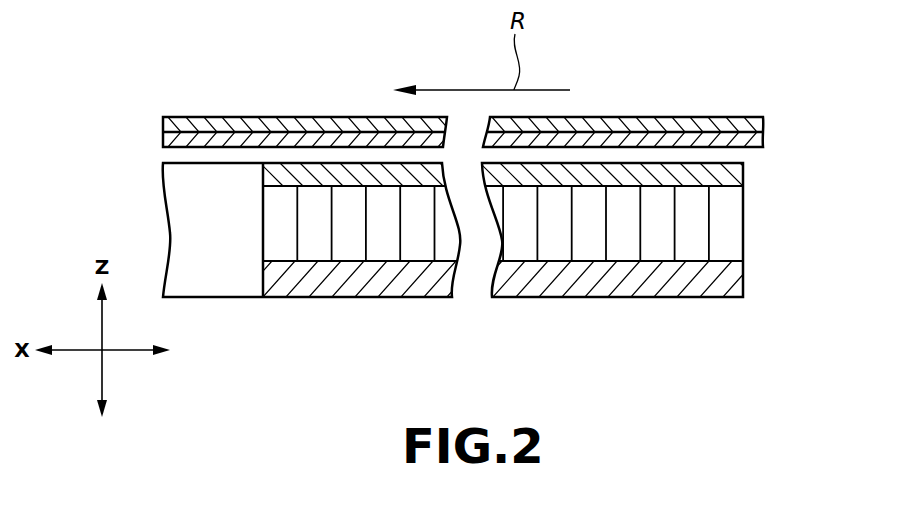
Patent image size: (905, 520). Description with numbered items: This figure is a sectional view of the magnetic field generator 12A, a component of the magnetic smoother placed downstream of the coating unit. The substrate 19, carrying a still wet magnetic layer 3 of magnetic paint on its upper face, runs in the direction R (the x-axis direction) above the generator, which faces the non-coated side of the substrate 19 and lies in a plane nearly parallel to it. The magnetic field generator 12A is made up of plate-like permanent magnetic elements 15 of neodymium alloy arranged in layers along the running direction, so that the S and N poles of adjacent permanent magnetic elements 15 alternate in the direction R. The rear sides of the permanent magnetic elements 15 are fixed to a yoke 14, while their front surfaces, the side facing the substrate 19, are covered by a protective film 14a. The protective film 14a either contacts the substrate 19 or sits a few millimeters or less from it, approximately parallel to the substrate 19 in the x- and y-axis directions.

The magnetic layer 3 is at (690, 118).
The magnetic field generator 12A is at (511, 266).
The yoke 14 is at (673, 285).
The protective film 14a is at (728, 173).
The permanent magnetic elements 15 is at (553, 262).
The substrate 19 is at (750, 150).